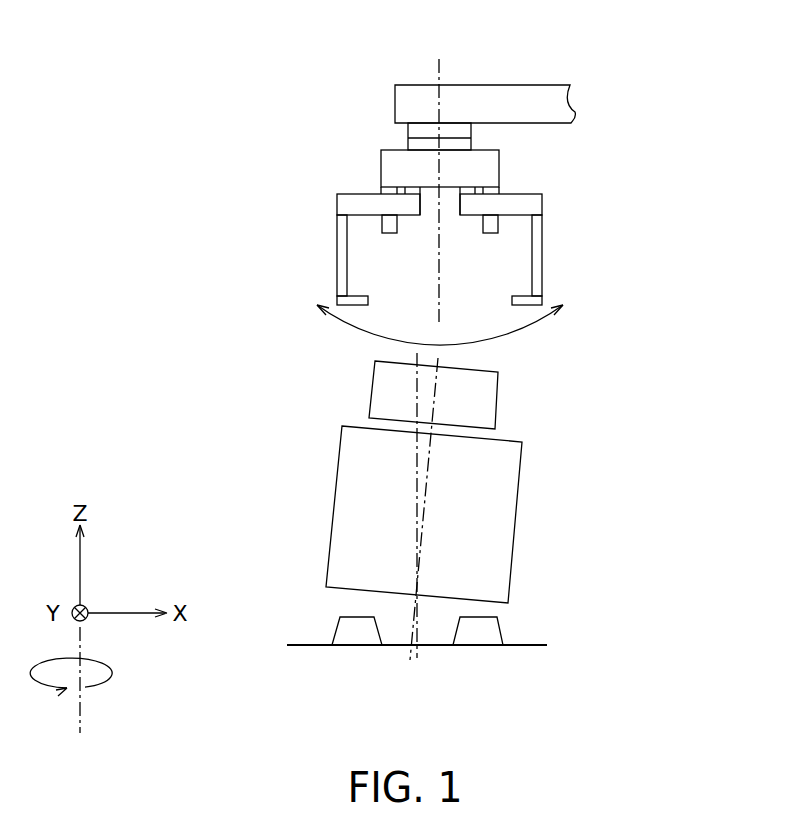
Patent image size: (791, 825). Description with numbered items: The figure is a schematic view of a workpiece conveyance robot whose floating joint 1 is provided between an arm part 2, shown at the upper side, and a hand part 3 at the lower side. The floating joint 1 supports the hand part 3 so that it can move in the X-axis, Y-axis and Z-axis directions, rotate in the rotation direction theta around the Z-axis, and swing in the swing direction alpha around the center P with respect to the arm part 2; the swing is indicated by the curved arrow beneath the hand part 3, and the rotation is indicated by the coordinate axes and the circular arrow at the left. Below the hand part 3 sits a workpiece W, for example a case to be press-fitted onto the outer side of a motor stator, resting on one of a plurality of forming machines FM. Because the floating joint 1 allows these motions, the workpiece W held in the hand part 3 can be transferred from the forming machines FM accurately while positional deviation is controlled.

The floating joint 1 is at (392, 137).
The arm part 2 is at (497, 85).
The hand part 3 is at (336, 257).
The center P is at (439, 138).
The workpiece W is at (372, 390).
The forming machine FM is at (333, 503).
The α direction alpha is at (530, 327).
The θ direction theta is at (110, 691).